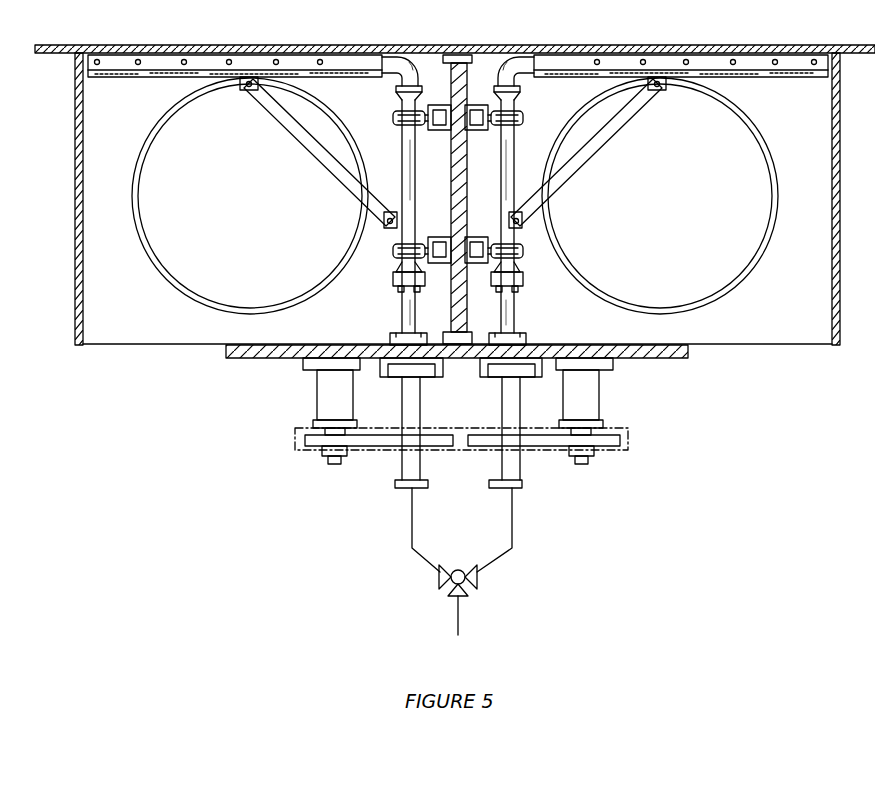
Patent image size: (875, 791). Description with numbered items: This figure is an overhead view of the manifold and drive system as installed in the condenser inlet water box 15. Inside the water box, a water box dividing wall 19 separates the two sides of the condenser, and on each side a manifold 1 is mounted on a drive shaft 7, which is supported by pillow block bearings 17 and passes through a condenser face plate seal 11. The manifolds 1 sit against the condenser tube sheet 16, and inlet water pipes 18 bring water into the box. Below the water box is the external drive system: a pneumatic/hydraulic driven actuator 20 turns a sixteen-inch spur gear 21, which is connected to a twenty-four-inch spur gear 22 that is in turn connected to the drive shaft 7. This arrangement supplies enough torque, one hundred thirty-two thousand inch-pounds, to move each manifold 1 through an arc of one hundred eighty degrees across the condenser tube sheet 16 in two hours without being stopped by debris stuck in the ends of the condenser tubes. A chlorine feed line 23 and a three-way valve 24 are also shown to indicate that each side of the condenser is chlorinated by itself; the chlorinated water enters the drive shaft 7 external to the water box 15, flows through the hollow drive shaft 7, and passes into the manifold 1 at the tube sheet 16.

The manifold 1 is at (799, 78).
The drive shaft 7 is at (418, 186).
The condenser face plate seal 11 is at (396, 338).
The inlet water box 15 is at (75, 230).
The condenser tube sheet 16 is at (686, 47).
The pillow block bearings 17 is at (394, 116).
The inlet water pipes 18 is at (756, 272).
The water box dividing wall 19 is at (463, 51).
The pneumatic/hydraulic driven actuator 20 is at (312, 398).
The 16-inch spur gear 21 is at (300, 442).
The 24-inch spur gear 22 is at (388, 465).
The chlorine feed line 23 is at (514, 530).
The 3-way valve 24 is at (480, 586).